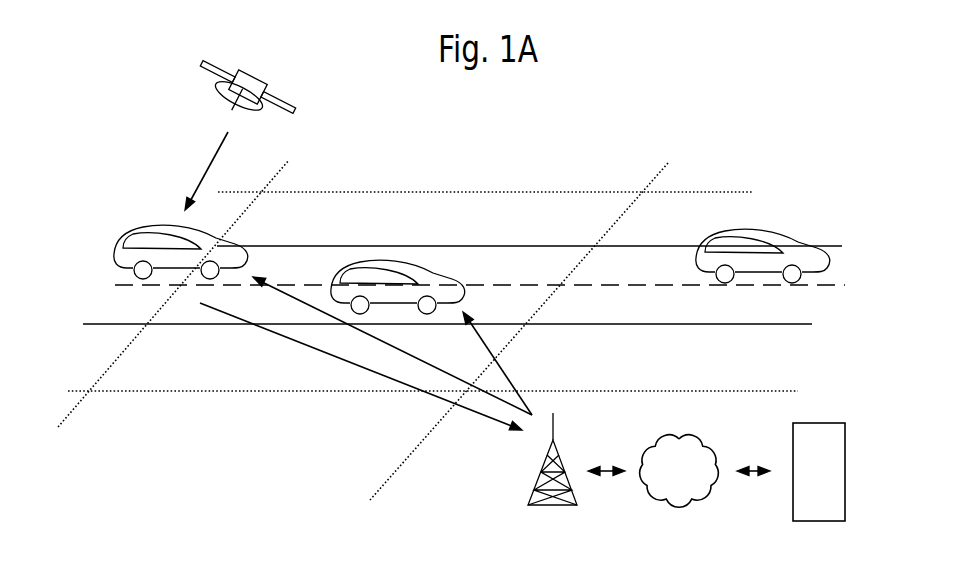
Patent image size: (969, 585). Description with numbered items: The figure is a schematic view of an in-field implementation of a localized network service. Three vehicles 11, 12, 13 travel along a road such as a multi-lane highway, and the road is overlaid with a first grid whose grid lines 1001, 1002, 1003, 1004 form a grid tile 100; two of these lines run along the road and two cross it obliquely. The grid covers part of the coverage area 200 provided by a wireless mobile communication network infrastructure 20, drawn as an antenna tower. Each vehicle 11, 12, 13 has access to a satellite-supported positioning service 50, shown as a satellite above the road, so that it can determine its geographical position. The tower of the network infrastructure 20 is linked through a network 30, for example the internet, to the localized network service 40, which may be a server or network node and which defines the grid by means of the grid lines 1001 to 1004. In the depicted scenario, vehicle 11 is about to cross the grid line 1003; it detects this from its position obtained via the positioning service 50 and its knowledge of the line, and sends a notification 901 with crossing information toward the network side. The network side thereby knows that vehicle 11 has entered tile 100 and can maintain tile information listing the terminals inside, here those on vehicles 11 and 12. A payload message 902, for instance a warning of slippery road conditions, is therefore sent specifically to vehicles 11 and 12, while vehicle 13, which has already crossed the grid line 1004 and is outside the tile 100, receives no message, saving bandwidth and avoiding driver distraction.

The satellite-supported positioning service 50 is at (298, 95).
The vehicle 11 is at (140, 228).
The vehicle 12 is at (365, 262).
The vehicle 13 is at (770, 235).
The grid tile 100 is at (477, 208).
The coverage area 200 is at (587, 176).
The grid line 1001 is at (375, 192).
The grid line 1002 is at (168, 392).
The grid line 1003 is at (73, 408).
The grid line 1004 is at (430, 435).
The notification 901 is at (353, 363).
The payload message 902 is at (507, 373).
The wireless mobile communication network infrastructure 20 is at (541, 505).
The network 30 is at (688, 480).
The localized network service 40 is at (828, 482).